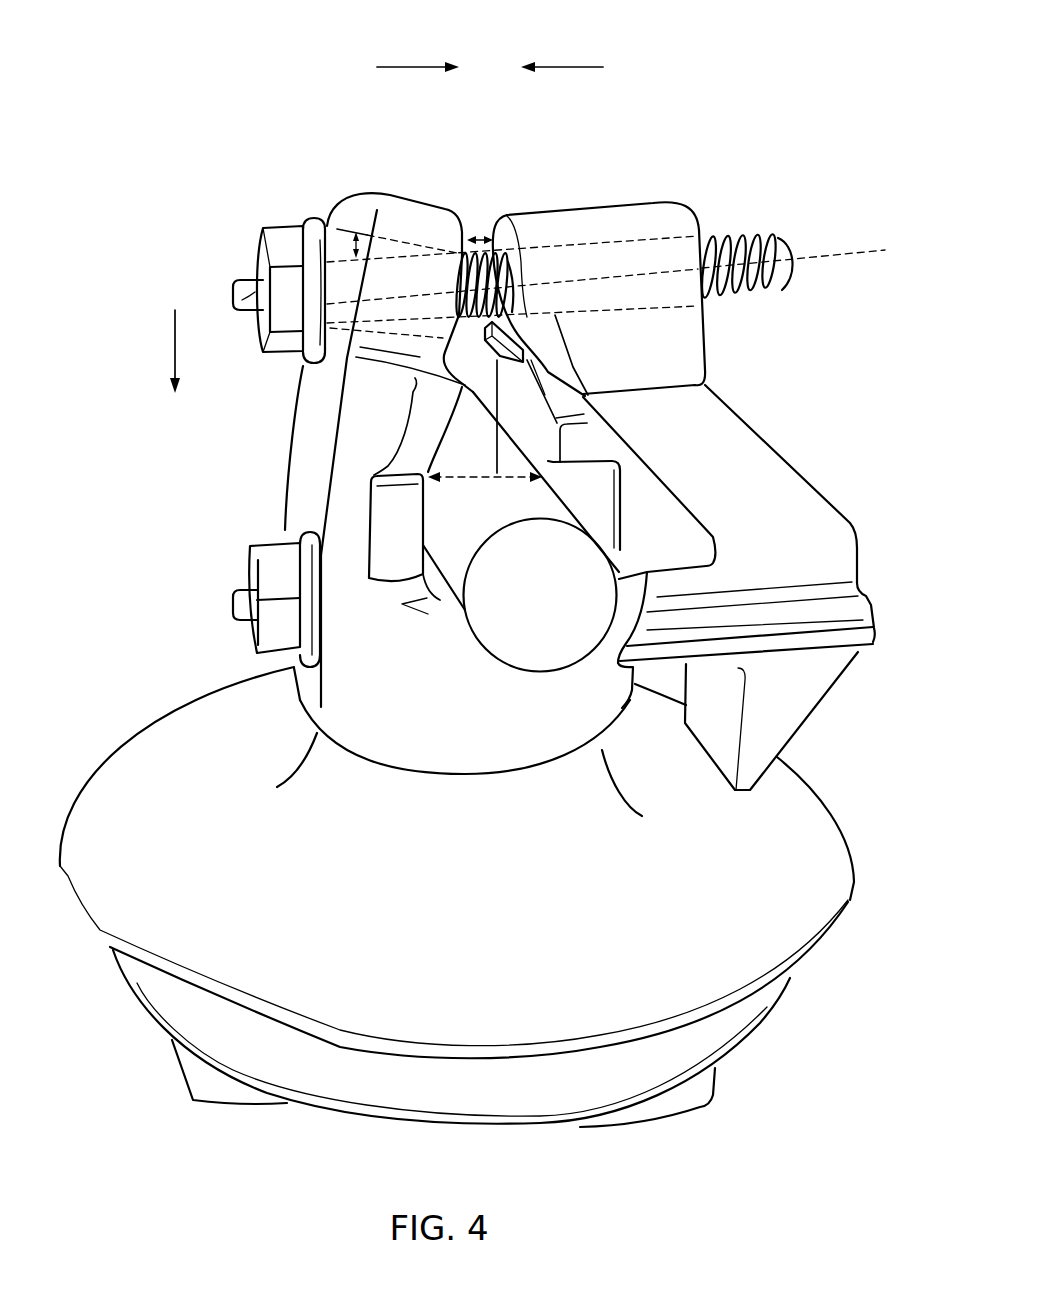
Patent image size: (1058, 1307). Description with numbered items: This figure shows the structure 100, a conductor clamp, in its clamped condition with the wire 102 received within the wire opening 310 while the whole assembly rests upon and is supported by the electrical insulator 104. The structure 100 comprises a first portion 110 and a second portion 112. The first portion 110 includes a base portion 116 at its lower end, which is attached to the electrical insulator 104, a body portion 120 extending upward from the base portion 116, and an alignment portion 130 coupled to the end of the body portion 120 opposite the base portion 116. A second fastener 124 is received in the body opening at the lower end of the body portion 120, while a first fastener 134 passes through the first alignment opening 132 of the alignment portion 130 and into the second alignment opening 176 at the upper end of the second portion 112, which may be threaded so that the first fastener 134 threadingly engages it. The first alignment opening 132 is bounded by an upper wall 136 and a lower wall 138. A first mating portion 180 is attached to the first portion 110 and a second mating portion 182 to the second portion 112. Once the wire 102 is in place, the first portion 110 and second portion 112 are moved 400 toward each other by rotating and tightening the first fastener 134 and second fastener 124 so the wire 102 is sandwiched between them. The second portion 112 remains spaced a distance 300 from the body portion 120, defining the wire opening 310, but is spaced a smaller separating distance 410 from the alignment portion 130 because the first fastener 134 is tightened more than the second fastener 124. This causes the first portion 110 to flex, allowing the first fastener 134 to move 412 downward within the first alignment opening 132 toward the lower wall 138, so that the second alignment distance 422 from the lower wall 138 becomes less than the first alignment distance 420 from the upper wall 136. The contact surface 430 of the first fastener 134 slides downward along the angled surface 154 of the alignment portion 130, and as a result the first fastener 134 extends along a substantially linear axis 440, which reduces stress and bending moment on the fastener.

The structure 100 is at (160, 64).
The wire 102 is at (540, 656).
The electrical insulator 104 is at (86, 915).
The first portion 110 is at (352, 748).
The second portion 112 is at (805, 501).
The base portion 116 is at (466, 750).
The body portion 120 is at (303, 468).
The second fastener 124 is at (266, 573).
The alignment portion 130 is at (408, 203).
The first alignment opening 132 is at (403, 240).
The first fastener 134 is at (277, 233).
The upper wall 136 is at (388, 238).
The lower wall 138 is at (393, 331).
The angled surface 154 is at (350, 230).
The second alignment opening 176 is at (592, 243).
The first mating portion 180 is at (383, 548).
The second mating portion 182 is at (610, 532).
The distance 300 is at (490, 481).
The wire opening 310 is at (584, 481).
The movement 400 is at (418, 67).
The separating distance 410 is at (483, 230).
The movement 412 is at (173, 343).
The first alignment distance 420 is at (357, 231).
The second alignment distance 422 is at (403, 330).
The contact surface 430 is at (306, 360).
The substantially linear axis 440 is at (822, 256).